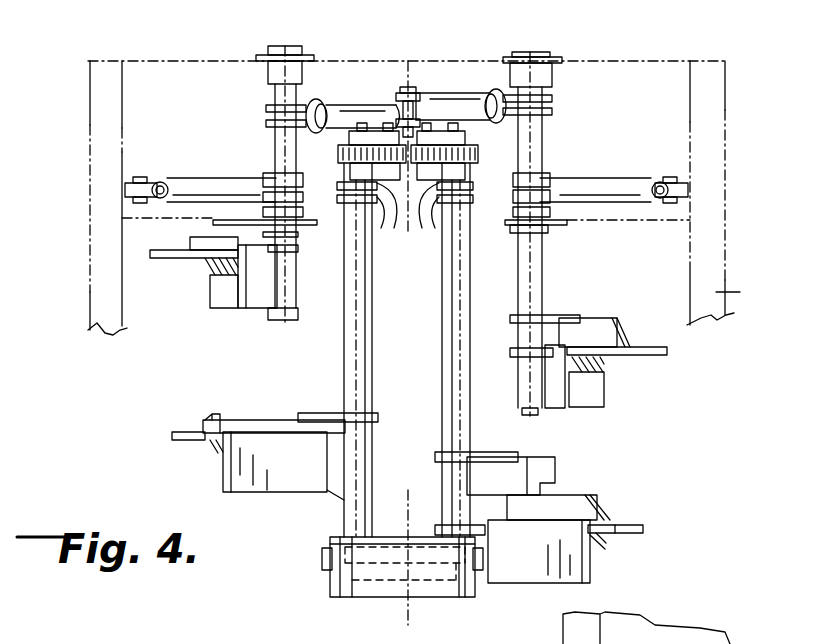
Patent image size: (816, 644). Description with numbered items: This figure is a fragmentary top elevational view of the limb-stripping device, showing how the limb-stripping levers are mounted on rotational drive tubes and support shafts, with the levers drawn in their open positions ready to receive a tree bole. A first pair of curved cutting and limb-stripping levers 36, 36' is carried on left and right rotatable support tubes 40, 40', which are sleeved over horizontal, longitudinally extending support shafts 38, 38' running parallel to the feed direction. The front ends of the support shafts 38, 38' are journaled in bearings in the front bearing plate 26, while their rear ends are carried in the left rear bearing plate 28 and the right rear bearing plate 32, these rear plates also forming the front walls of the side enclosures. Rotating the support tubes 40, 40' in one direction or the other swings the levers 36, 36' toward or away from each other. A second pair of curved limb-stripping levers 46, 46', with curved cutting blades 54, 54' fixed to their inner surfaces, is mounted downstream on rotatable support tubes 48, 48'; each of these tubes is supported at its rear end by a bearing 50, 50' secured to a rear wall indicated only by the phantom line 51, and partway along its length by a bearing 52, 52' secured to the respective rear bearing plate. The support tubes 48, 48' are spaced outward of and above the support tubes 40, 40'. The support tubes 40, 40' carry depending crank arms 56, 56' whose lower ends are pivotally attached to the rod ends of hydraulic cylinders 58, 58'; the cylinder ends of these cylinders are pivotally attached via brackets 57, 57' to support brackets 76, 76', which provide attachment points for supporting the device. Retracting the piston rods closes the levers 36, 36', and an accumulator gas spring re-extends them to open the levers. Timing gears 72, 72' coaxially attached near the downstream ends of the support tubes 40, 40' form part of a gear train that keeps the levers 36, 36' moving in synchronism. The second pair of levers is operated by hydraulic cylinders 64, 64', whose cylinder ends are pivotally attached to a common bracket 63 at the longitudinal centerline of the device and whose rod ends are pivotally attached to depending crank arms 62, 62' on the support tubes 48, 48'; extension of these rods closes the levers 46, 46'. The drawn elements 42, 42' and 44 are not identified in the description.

The front bearing plate 26 is at (391, 540).
The left rear bearing plate 28 is at (139, 220).
The right rear bearing plate 32 is at (691, 222).
The limb-stripping lever 36 is at (238, 441).
The limb-stripping lever 36' is at (575, 492).
The support shaft 38 is at (367, 571).
The support shaft 38' is at (464, 602).
The rotatable support tube 40 is at (326, 350).
The rotatable support tube 40' is at (482, 350).
The left housing 42 is at (277, 498).
The right housing 42' is at (543, 551).
The base block 44 is at (346, 598).
The limb-stripping lever 46 is at (190, 270).
The limb-stripping lever 46' is at (606, 359).
The rotatable support tube 48 is at (249, 185).
The rotatable support tube 48' is at (568, 234).
The bearing 50 is at (257, 50).
The bearing 50' is at (559, 52).
The phantom line 51 is at (153, 61).
The bearing 52 is at (271, 238).
The bearing 52' is at (559, 228).
The cutting blade 54 is at (223, 298).
The cutting blade 54' is at (598, 394).
The crank arm 56 is at (371, 219).
The crank arm 56' is at (463, 236).
The bracket 57 is at (89, 178).
The bracket 57' is at (717, 178).
The hydraulic cylinder 58 is at (216, 158).
The hydraulic cylinder 58' is at (589, 159).
The crank arm 62 is at (243, 105).
The crank arm 62' is at (572, 94).
The common bracket 63 is at (401, 86).
The hydraulic cylinder 64 is at (353, 75).
The hydraulic cylinder 64' is at (461, 69).
The timing gear 72 is at (305, 151).
The timing gear 72' is at (501, 151).
The support bracket 76 is at (70, 321).
The support bracket 76' is at (744, 316).